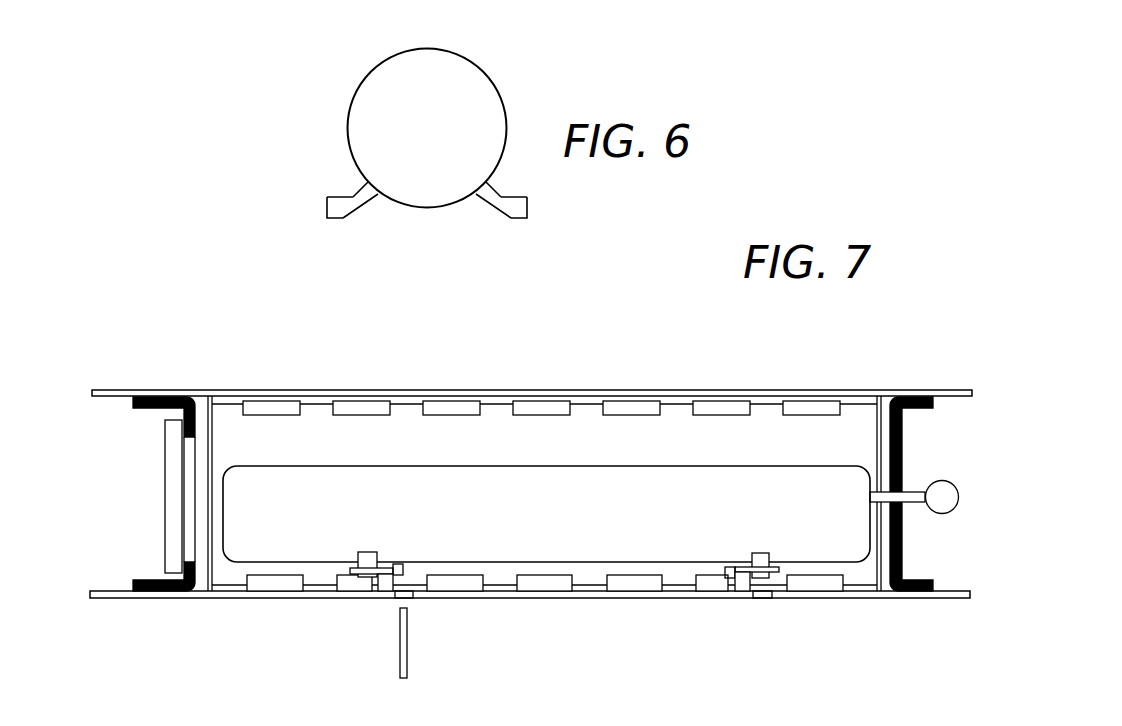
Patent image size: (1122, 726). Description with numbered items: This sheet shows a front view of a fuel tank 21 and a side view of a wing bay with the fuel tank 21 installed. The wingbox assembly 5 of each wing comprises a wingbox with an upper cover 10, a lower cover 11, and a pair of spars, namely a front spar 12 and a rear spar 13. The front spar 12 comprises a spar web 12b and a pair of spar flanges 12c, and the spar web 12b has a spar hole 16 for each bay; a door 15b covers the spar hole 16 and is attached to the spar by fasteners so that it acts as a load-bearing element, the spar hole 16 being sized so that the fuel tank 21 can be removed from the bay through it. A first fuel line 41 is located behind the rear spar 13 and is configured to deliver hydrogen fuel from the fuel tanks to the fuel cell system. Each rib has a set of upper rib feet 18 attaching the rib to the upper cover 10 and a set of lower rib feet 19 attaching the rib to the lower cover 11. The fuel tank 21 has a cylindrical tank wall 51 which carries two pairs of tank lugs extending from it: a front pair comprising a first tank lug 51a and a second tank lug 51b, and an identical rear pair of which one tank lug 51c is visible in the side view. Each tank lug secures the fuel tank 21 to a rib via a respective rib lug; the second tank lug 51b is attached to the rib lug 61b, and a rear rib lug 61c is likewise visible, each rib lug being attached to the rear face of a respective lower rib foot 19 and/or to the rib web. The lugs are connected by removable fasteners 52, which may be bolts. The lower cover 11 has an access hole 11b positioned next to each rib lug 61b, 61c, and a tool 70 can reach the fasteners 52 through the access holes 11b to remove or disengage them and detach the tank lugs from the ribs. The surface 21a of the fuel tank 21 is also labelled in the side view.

In FIG. 7, the wingbox assembly 5 is at (297, 353).
In FIG. 7, the upper cover 10 is at (952, 393).
In FIG. 7, the lower cover 11 is at (220, 595).
In FIG. 7, the access hole 11b is at (405, 595).
In FIG. 7, the front spar 12 is at (145, 502).
In FIG. 7, the spar web 12b is at (182, 416).
In FIG. 7, the spar flanges 12c is at (148, 593).
In FIG. 7, the rear spar 13 is at (900, 400).
In FIG. 7, the door 15b is at (172, 492).
In FIG. 7, the spar hole 16 is at (193, 455).
In FIG. 7, the upper rib feet 18 is at (717, 400).
In FIG. 7, the lower rib feet 19 is at (347, 582).
In FIG. 6, the fuel tank 21 is at (448, 82).
In FIG. 7, the fuel tank 21 is at (545, 537).
In FIG. 7, the upper surface of core member 21a is at (512, 443).
In FIG. 7, the first fuel line 41 is at (952, 478).
In FIG. 6, the tank wall 51 is at (401, 209).
In FIG. 6, the first tank lug 51a is at (362, 195).
In FIG. 6, the second tank lug 51b is at (488, 197).
In FIG. 7, the second tank lug 51b is at (370, 558).
In FIG. 7, the tank lug 51c is at (762, 558).
In FIG. 7, the fastener 52 is at (398, 568).
In FIG. 7, the rib lug 61b is at (385, 583).
In FIG. 7, the rib lug 61c is at (743, 588).
In FIG. 7, the tool 70 is at (397, 654).